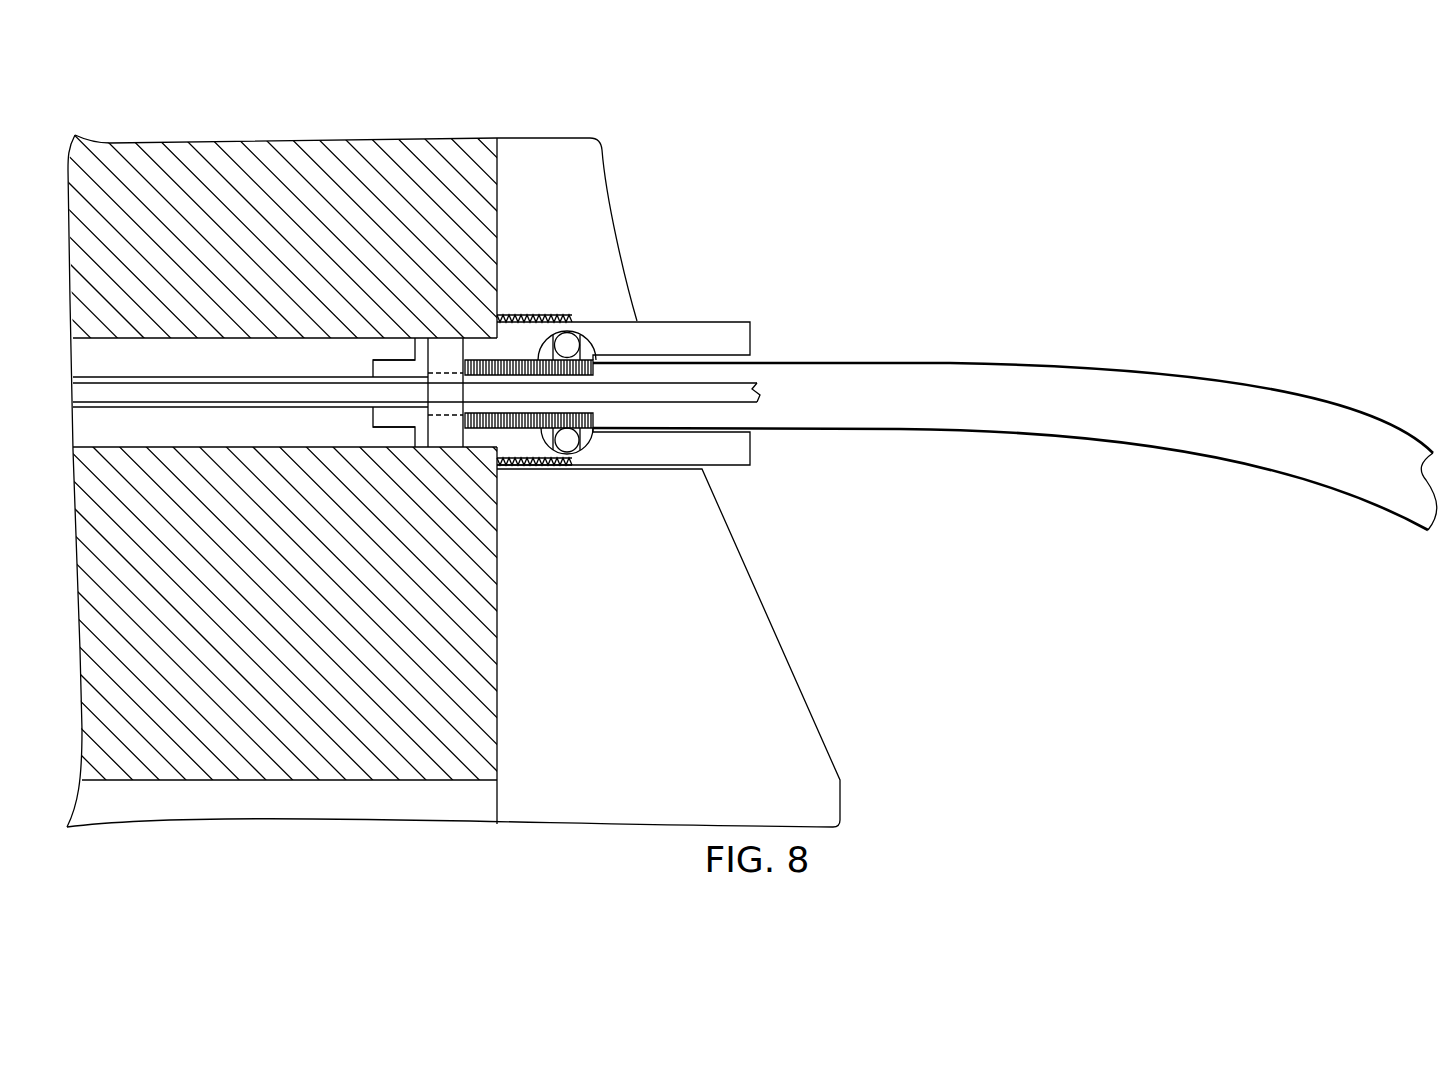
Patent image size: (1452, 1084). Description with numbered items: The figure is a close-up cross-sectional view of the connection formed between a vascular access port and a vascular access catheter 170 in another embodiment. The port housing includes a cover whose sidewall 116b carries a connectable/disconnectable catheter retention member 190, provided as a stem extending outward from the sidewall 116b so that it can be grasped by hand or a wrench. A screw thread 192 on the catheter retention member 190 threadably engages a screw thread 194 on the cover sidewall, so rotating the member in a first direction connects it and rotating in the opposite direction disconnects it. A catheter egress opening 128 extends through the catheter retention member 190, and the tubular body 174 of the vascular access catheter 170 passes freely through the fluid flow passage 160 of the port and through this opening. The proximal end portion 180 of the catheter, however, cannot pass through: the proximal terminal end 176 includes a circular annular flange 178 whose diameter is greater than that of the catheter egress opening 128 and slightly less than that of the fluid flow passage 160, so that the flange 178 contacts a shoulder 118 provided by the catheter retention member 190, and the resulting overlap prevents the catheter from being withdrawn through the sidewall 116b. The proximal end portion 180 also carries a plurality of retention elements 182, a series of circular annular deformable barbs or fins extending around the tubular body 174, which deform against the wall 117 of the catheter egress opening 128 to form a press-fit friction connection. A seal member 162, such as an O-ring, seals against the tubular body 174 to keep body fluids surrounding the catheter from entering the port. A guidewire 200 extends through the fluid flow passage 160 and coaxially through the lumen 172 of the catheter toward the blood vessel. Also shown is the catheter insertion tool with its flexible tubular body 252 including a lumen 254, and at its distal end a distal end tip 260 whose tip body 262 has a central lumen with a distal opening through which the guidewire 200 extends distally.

The sidewall 116b is at (787, 695).
The wall 117 is at (648, 433).
The shoulder 118 is at (513, 445).
The catheter egress opening 128 is at (750, 358).
The fluid flow passage 160 is at (274, 357).
The seal member 162 is at (572, 342).
The vascular access catheter 170 is at (1264, 282).
The lumen 172 is at (1062, 383).
The tubular body 174 is at (829, 430).
The proximal terminal end 176 is at (424, 394).
The circular annular flange 178 is at (447, 353).
The proximal end portion 180 is at (482, 434).
The retention elements 182 is at (482, 360).
The catheter retention member 190 is at (697, 290).
The screw thread 192 is at (555, 318).
The screw thread 194 is at (534, 318).
The guidewire 200 is at (242, 393).
The flexible tubular body 252 is at (158, 377).
The lumen 254 is at (200, 380).
The distal end tip 260 is at (360, 462).
The tip body 262 is at (399, 434).